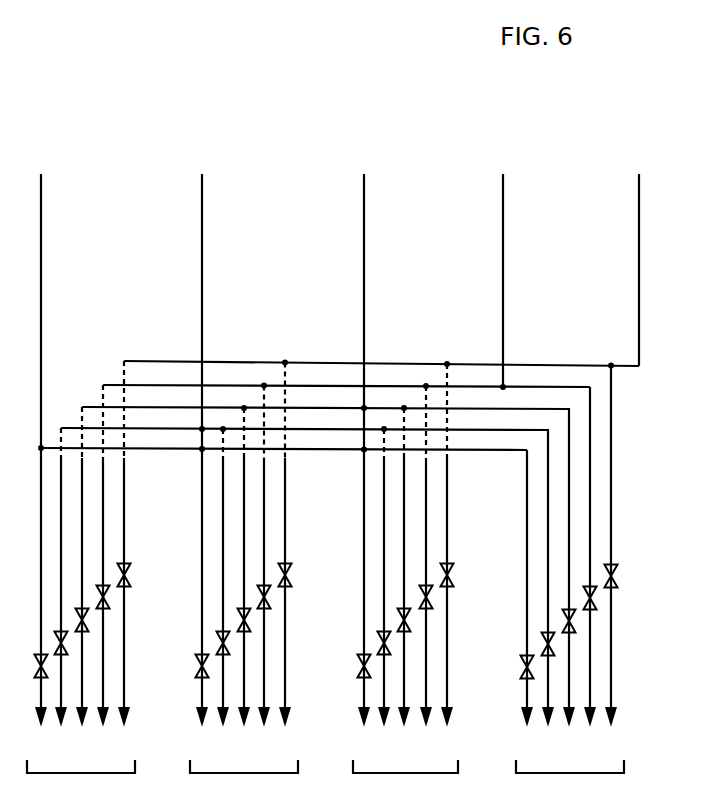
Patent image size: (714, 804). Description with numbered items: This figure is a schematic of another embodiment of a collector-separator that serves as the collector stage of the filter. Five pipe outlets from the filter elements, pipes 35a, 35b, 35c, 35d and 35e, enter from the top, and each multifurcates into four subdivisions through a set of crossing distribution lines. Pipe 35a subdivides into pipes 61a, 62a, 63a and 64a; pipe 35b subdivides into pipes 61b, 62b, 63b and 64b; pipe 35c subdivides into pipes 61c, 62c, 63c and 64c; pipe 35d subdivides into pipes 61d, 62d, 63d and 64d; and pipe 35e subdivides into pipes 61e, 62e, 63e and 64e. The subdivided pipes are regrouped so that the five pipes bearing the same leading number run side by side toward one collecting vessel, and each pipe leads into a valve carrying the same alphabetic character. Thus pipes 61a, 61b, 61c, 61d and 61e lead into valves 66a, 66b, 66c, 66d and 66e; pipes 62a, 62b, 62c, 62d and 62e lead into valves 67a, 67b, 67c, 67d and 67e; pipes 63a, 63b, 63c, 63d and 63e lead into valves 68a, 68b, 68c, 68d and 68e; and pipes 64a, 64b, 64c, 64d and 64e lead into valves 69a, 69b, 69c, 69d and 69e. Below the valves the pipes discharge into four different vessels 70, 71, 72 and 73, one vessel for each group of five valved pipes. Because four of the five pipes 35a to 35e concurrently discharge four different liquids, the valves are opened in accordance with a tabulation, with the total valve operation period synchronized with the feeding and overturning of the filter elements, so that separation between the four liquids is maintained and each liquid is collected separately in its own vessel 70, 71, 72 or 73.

The pipe 35a is at (41, 199).
The pipe 35b is at (202, 199).
The pipe 35c is at (364, 199).
The pipe 35d is at (503, 199).
The pipe 35e is at (639, 199).
The pipe 61a is at (33, 585).
The pipe 61b is at (53, 575).
The pipe 61c is at (74, 565).
The pipe 61d is at (95, 554).
The pipe 61e is at (116, 542).
The pipe 62a is at (194, 576).
The pipe 62b is at (215, 576).
The pipe 62c is at (236, 565).
The pipe 62d is at (256, 555).
The pipe 62e is at (277, 543).
The pipe 63a is at (356, 565).
The pipe 63b is at (376, 576).
The pipe 63c is at (396, 565).
The pipe 63d is at (418, 554).
The pipe 63e is at (439, 543).
The pipe 64a is at (519, 586).
The pipe 64b is at (540, 576).
The pipe 64c is at (561, 566).
The pipe 64d is at (582, 555).
The pipe 64e is at (603, 545).
The valve 66a is at (34, 648).
The valve 66b is at (54, 625).
The valve 66c is at (75, 602).
The valve 66d is at (96, 579).
The valve 66e is at (117, 557).
The valve 67a is at (195, 648).
The valve 67b is at (216, 625).
The valve 67c is at (237, 602).
The valve 67d is at (257, 579).
The valve 67e is at (278, 557).
The valve 68a is at (357, 648).
The valve 68b is at (377, 625).
The valve 68c is at (397, 602).
The valve 68d is at (419, 579).
The valve 68e is at (440, 557).
The valve 69a is at (520, 649).
The valve 69b is at (541, 626).
The valve 69c is at (562, 603).
The valve 69d is at (583, 580).
The valve 69e is at (604, 558).
The vessel 70 is at (81, 760).
The vessel 71 is at (244, 760).
The vessel 72 is at (405, 760).
The vessel 73 is at (570, 760).